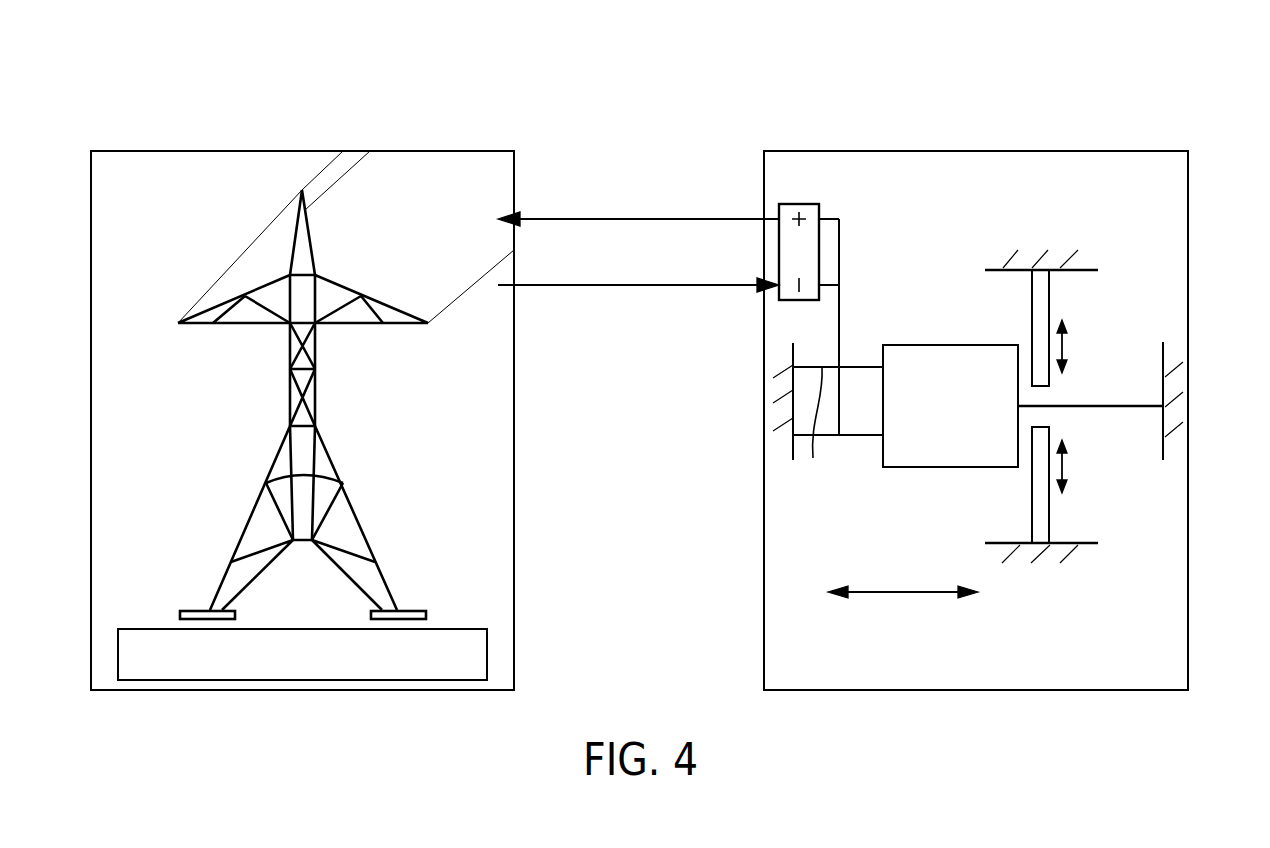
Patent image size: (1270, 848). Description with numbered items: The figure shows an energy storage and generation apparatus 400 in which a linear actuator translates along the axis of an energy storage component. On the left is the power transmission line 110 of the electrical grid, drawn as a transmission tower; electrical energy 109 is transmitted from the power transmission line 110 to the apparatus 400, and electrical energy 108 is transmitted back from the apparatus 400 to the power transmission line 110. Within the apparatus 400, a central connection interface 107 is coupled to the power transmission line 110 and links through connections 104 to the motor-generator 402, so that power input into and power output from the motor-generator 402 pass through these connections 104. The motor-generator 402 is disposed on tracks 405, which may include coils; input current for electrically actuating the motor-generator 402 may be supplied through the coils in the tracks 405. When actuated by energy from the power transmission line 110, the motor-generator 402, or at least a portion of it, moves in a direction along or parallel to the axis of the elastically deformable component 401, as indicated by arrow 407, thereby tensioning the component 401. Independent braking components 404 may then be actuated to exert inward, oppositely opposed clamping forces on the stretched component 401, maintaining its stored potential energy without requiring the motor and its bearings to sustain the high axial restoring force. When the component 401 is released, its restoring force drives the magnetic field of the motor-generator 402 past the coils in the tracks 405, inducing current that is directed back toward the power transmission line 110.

The apparatus 400 is at (1108, 73).
The power transmission line 110 is at (470, 150).
The electrical energy 108 is at (628, 217).
The electrical energy 109 is at (590, 287).
The central connection interface 107 is at (806, 204).
The connections 104 is at (839, 219).
The tracks 405 is at (859, 437).
The motor-generator 402 is at (938, 470).
The elastically deformable component 401 is at (1125, 408).
The braking components 404 is at (1049, 285).
The arrow 407 is at (902, 593).